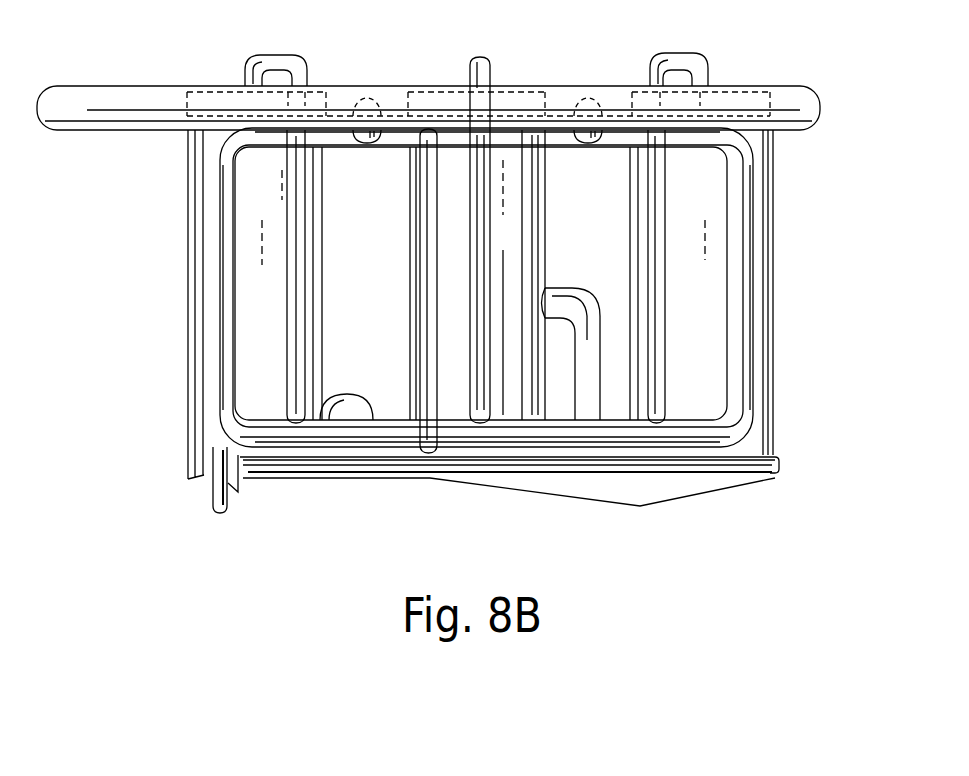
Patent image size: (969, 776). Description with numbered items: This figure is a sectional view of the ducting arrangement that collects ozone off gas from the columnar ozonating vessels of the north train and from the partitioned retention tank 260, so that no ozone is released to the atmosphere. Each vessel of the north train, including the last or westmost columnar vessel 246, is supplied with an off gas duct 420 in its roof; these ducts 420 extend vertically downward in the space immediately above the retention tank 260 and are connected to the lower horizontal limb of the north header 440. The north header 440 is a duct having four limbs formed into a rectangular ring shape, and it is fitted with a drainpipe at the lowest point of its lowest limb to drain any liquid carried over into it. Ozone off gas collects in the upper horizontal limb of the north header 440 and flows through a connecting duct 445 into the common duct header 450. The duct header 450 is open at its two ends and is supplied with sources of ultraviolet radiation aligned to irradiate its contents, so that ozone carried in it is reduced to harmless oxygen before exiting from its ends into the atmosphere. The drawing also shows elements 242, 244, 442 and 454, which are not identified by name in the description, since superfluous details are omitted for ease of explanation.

The off gas duct 420 is at (275, 57).
The common duct header 450 is at (788, 88).
The connecting duct 445 is at (372, 144).
The north header 440 is at (737, 247).
The last columnar vessel of the north train 246 is at (183, 285).
The right side panel 242 is at (777, 424).
The vertical post 442 is at (425, 283).
The vertical support post 244 is at (548, 215).
The partitioned holding tank 260 is at (780, 462).
The support leg 454 is at (213, 501).